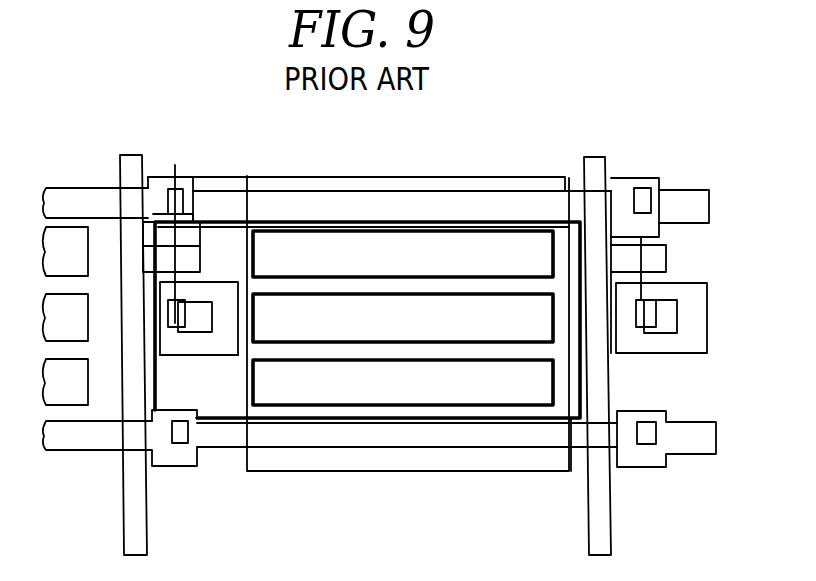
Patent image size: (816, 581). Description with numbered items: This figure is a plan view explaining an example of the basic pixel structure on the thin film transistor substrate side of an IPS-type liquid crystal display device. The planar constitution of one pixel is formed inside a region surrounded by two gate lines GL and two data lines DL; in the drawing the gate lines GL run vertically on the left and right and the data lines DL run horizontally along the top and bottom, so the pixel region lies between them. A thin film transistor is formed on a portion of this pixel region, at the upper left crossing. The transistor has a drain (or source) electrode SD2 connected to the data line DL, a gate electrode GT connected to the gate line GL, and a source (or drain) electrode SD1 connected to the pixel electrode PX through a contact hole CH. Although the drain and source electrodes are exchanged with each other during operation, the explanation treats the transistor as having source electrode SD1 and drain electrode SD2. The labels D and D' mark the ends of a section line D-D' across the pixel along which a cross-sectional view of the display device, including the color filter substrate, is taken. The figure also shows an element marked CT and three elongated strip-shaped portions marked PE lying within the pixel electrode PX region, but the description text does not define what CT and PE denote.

The gate line GL is at (129, 160).
The drain electrode SD2 is at (190, 190).
The section line end D is at (175, 225).
The gate electrode GT is at (188, 257).
The source electrode SD1 is at (230, 282).
The section line end D' is at (241, 416).
The contact hole CH is at (193, 332).
The pixel electrode PX is at (322, 222).
The common electrode CT is at (425, 182).
The pixel electrode PE is at (384, 261).
The data line DL is at (532, 192).